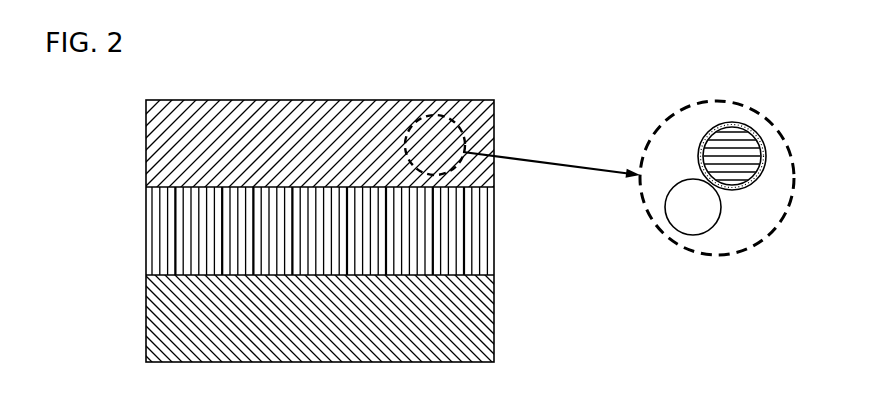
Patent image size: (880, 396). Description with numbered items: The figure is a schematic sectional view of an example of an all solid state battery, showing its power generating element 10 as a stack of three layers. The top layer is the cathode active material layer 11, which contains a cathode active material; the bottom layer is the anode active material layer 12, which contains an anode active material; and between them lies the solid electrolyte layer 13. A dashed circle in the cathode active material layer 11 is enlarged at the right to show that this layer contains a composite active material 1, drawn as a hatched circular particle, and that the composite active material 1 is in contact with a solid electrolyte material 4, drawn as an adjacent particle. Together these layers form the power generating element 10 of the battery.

The power generating element 10 is at (522, 79).
The cathode active material layer 11 is at (481, 117).
The anode active material layer 12 is at (433, 310).
The solid electrolyte layer 13 is at (433, 233).
The composite active material 1 is at (768, 131).
The solid electrolyte material 4 is at (692, 207).